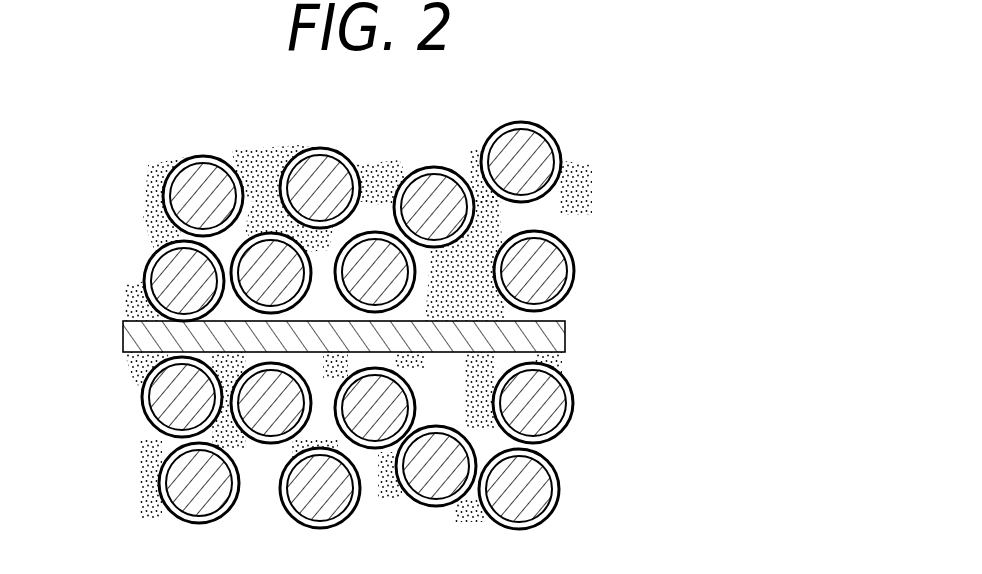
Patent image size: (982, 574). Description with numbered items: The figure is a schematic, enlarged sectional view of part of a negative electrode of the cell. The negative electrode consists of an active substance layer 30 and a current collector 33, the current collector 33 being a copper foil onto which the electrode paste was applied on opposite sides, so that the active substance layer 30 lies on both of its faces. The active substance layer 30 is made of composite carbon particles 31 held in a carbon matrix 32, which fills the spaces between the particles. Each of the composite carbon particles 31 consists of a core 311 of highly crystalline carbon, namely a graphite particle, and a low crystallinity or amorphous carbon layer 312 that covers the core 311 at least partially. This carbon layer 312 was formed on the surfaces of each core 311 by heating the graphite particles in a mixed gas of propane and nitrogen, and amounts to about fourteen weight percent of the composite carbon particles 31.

The active substance layer 30 is at (118, 265).
The composite carbon particles 31 is at (573, 141).
The core 311 is at (527, 133).
The carbon layer 312 is at (556, 140).
The carbon matrix 32 is at (547, 213).
The current collector 33 is at (565, 333).